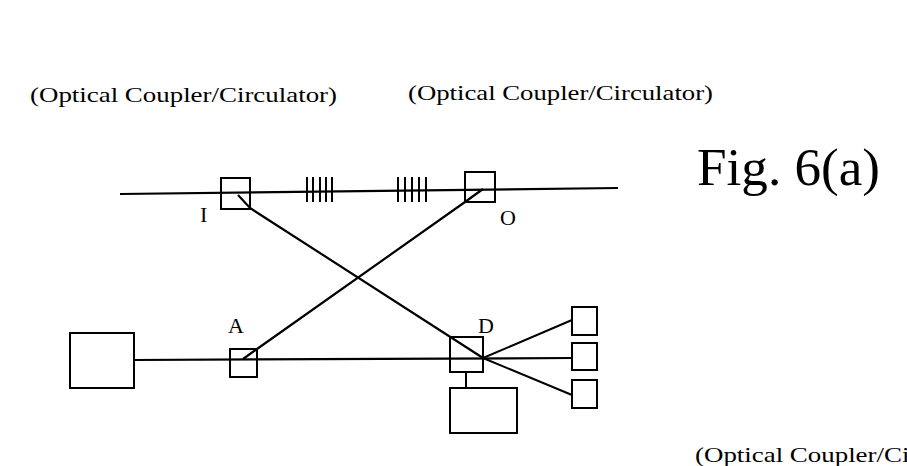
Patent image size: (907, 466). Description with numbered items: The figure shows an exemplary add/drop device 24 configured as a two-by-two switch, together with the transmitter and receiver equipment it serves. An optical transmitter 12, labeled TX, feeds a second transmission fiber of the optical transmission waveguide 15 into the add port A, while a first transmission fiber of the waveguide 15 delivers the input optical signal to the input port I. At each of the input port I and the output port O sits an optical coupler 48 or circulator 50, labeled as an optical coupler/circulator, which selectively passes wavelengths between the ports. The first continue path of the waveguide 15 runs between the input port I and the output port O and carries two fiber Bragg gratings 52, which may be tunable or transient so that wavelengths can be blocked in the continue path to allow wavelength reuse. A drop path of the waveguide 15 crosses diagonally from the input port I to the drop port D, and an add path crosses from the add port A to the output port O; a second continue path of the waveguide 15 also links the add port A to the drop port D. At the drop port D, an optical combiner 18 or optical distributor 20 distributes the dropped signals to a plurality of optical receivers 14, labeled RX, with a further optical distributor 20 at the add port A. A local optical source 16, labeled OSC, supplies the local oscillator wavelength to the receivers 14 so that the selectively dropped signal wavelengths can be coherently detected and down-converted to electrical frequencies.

The optical transmitter 12 is at (103, 388).
The optical receiver 14 is at (597, 322).
The optical transmission waveguide 15 is at (443, 250).
The local optical source 16 is at (480, 433).
The optical combiner 18 is at (455, 337).
The optical distributor 20 is at (245, 378).
The add/drop device 24 is at (563, 62).
The coupler 48 is at (238, 178).
The circulator 50 is at (482, 172).
The fiber Bragg grating 52 is at (410, 170).